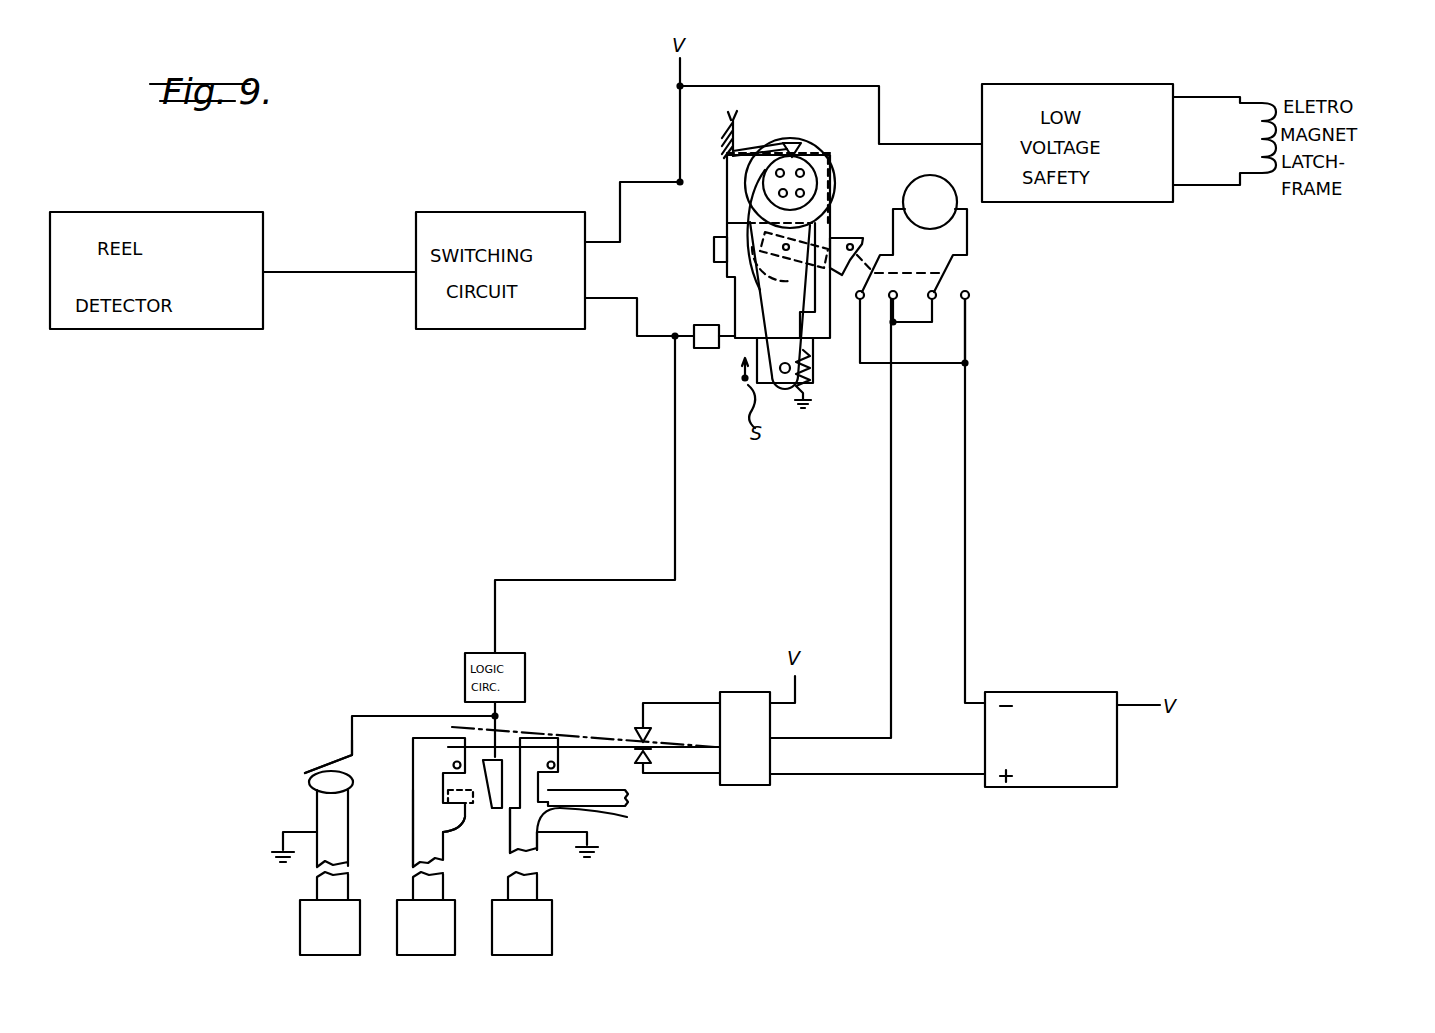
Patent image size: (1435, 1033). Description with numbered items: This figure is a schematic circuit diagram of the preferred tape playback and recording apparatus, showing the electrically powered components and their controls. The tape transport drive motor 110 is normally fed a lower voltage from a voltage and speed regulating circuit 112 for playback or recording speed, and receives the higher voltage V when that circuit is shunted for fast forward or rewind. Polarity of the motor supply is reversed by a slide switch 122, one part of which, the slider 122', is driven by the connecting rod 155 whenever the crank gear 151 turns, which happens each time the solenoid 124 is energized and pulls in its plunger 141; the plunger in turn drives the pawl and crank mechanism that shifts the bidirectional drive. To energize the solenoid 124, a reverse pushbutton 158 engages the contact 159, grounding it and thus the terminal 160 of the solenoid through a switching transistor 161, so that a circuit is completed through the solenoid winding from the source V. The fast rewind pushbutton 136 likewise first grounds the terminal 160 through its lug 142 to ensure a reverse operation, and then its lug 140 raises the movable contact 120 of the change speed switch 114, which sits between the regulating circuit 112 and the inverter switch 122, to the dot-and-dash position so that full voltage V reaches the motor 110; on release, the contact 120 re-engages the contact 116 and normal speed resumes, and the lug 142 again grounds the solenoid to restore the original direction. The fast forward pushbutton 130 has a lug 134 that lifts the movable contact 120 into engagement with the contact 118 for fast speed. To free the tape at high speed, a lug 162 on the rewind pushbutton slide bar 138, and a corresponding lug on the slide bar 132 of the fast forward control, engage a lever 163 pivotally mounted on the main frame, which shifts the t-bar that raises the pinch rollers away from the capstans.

The tape transport drive motor 110 is at (945, 160).
The voltage and speed regulating circuit 112 is at (1082, 692).
The change speed switch 114 is at (760, 786).
The contact 116 is at (652, 760).
The contact 118 is at (641, 738).
The movable contact 120 is at (608, 748).
The slide switch 122 is at (946, 312).
The slider 122' is at (773, 237).
The solenoid 124 is at (733, 293).
The fast forward pushbutton 130 is at (403, 926).
The slide bar 132 is at (420, 845).
The lug 134 is at (451, 764).
The fast rewind pushbutton 136 is at (555, 945).
The pushbutton slide bar 138 is at (540, 840).
The lug 140 is at (556, 758).
The solenoid plunger 141 is at (812, 364).
The lug 142 is at (498, 816).
The crank gear 151 is at (758, 237).
The connecting rod 155 is at (835, 263).
The reverse pushbutton 158 is at (302, 928).
The contact 159 is at (332, 763).
The terminal 160 is at (745, 345).
The switching transistor 161 is at (690, 346).
The lug 162 is at (455, 810).
The lever 163 is at (446, 800).